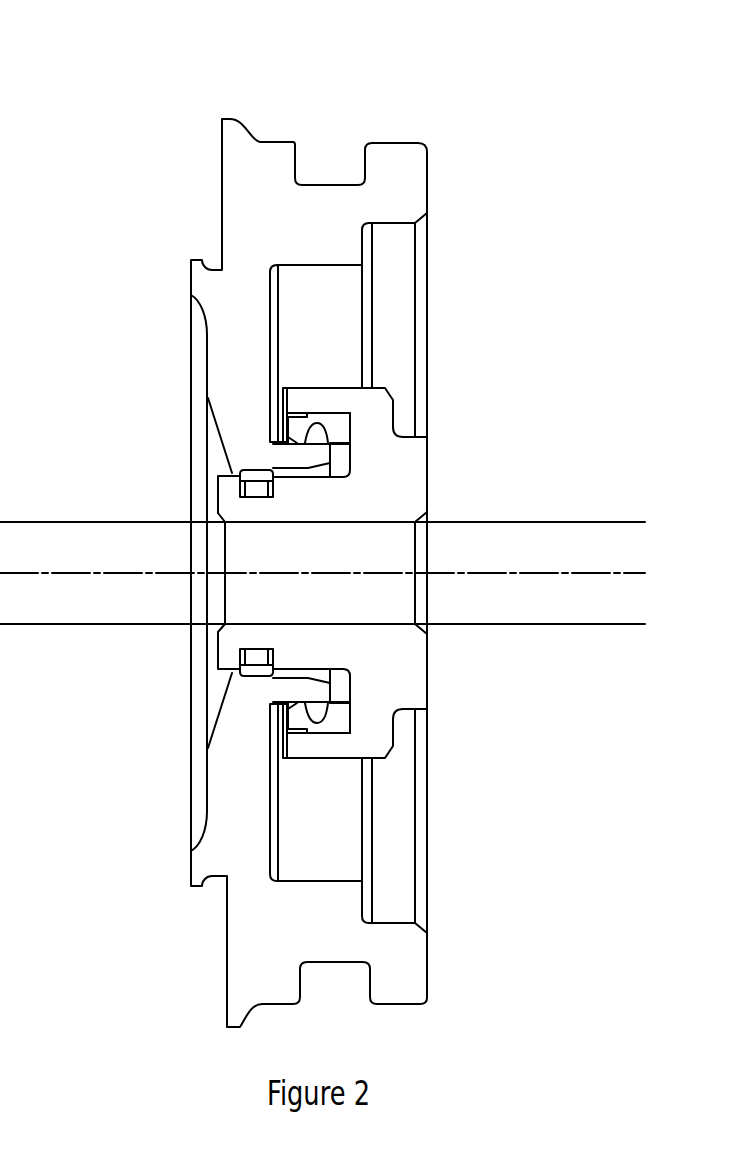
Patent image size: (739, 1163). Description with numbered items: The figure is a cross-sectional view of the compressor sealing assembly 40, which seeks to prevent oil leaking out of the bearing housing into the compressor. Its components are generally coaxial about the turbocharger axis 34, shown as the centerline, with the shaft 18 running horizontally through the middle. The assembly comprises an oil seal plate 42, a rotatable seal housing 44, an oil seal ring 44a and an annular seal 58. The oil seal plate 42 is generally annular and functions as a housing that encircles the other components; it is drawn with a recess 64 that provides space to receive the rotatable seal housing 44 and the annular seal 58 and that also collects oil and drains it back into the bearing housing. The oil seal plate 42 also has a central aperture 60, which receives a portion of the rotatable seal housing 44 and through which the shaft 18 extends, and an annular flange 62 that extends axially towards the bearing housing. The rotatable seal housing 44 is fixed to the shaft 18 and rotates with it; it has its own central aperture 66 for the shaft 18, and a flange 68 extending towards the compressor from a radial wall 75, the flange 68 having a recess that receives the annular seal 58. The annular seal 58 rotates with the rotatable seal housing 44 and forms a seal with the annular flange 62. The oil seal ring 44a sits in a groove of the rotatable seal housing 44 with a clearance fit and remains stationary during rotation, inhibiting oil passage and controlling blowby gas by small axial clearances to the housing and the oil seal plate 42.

The compressor sealing assembly 40 is at (83, 70).
The oil seal plate 42 is at (387, 183).
The rotatable seal housing 44 is at (392, 475).
The oil seal ring 44a is at (257, 478).
The annular seal 58 is at (335, 423).
The central aperture 60 is at (232, 473).
The annular flange 62 is at (302, 690).
The recess 64 is at (345, 332).
The central aperture 66 is at (247, 598).
The flange 68 is at (348, 748).
The radial wall 75 is at (353, 712).
The shaft 18 is at (562, 625).
The turbocharger axis 34 is at (578, 572).